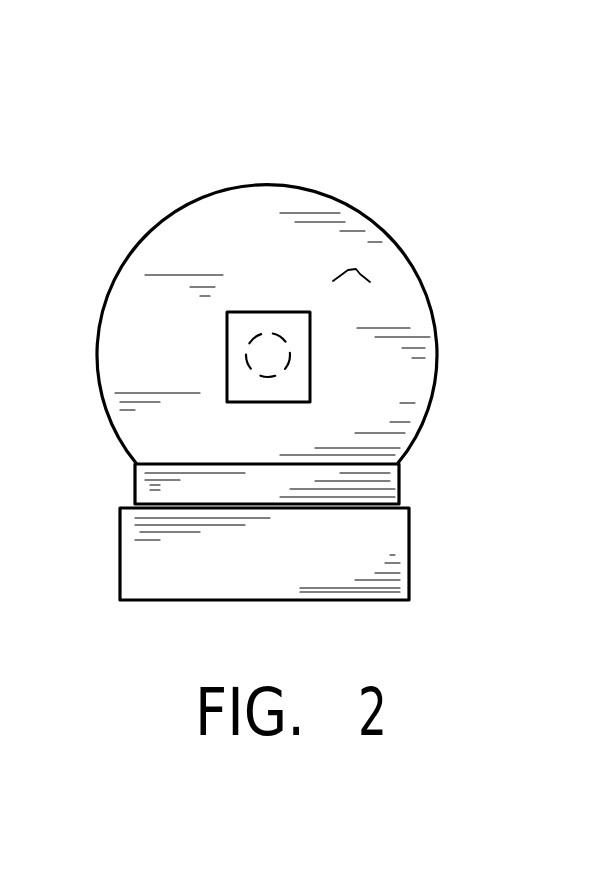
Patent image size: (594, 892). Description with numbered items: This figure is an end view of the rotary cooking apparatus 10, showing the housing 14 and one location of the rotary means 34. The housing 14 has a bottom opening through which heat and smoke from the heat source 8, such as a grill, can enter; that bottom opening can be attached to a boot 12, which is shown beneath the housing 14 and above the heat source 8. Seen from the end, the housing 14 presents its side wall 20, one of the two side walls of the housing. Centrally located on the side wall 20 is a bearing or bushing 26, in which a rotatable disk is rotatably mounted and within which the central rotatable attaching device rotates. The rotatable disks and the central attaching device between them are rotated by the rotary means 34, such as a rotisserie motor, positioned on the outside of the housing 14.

The rotary cooking apparatus 10 is at (167, 172).
The housing 14 is at (310, 187).
The side wall 20 is at (358, 270).
The bearing or bushing 26 is at (279, 350).
The rotary means 34 is at (288, 392).
The boot 12 is at (400, 482).
The heat source 8 is at (396, 533).